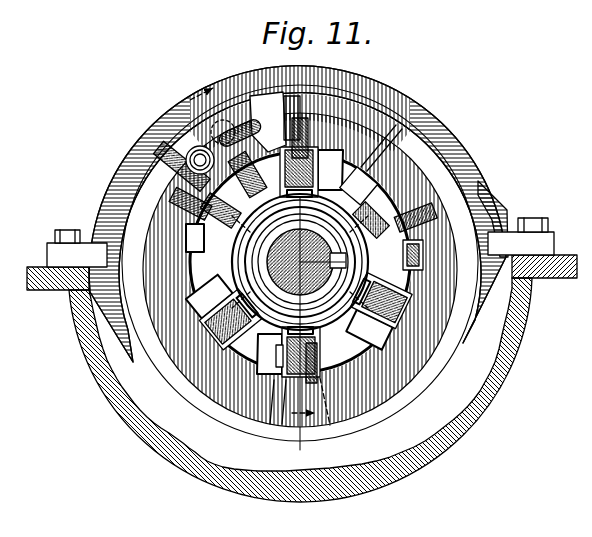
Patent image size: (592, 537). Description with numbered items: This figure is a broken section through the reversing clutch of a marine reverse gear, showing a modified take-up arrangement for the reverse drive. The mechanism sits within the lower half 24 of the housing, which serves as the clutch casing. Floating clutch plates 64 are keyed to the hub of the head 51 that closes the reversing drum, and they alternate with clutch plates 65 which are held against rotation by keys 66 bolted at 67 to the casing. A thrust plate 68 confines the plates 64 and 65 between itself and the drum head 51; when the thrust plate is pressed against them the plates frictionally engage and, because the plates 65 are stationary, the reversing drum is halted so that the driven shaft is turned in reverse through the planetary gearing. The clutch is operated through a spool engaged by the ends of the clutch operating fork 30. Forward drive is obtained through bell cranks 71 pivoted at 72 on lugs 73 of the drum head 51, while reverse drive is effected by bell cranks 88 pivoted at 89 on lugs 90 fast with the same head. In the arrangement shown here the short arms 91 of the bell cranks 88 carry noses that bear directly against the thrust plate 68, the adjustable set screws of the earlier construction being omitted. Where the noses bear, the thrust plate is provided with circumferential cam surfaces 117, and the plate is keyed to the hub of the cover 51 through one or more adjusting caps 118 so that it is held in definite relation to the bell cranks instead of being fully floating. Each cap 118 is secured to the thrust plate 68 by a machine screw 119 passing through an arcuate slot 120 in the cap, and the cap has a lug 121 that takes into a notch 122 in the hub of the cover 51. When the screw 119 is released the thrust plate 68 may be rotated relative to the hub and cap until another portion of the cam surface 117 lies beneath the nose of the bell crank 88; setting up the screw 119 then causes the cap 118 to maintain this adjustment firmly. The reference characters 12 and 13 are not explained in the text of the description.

The shaft 12 is at (300, 297).
The direction arrow 13 is at (197, 95).
The lower half of the housing 24 is at (150, 425).
The clutch operating fork 30 is at (288, 360).
The head 51 is at (200, 280).
The floating clutch plates 64 is at (447, 165).
The clutch plates 65 is at (486, 202).
The keys 66 is at (57, 251).
The bolts 67 is at (64, 232).
The thrust plate 68 is at (365, 112).
The bell cranks 71 is at (330, 150).
The pivot 72 is at (330, 165).
The lugs 73 is at (213, 305).
The bell crank 88 is at (215, 220).
The pivot 89 is at (198, 258).
The lugs 90 is at (412, 250).
The short arms 91 is at (190, 200).
The circumferential cam surfaces 117 is at (360, 160).
The adjusting cap 118 is at (268, 140).
The machine screw 119 is at (192, 148).
The arcuate slot 120 is at (234, 102).
The lug 121 is at (288, 118).
The notch 122 is at (255, 206).